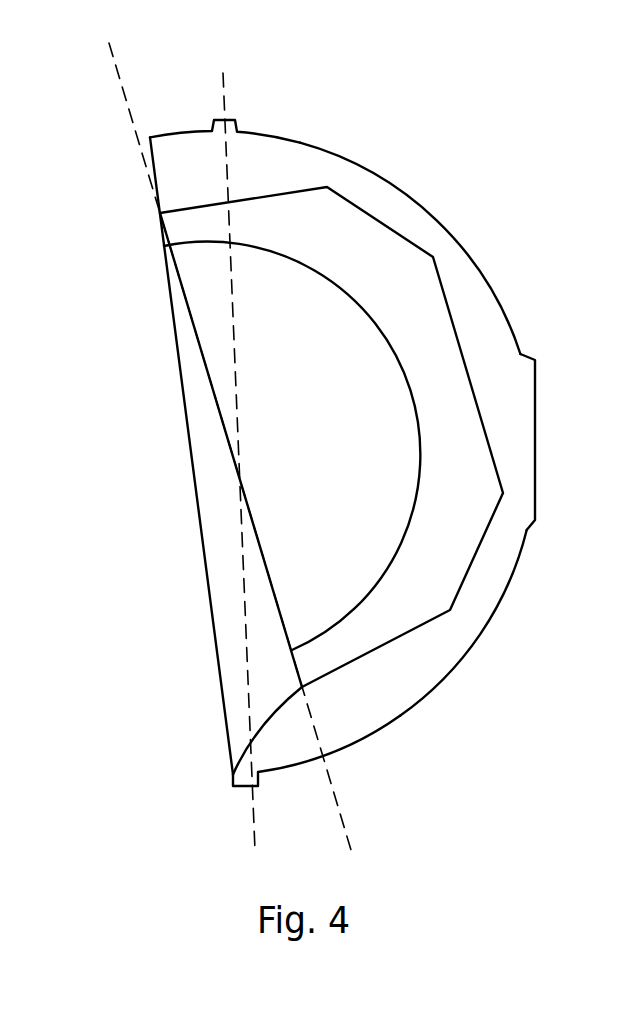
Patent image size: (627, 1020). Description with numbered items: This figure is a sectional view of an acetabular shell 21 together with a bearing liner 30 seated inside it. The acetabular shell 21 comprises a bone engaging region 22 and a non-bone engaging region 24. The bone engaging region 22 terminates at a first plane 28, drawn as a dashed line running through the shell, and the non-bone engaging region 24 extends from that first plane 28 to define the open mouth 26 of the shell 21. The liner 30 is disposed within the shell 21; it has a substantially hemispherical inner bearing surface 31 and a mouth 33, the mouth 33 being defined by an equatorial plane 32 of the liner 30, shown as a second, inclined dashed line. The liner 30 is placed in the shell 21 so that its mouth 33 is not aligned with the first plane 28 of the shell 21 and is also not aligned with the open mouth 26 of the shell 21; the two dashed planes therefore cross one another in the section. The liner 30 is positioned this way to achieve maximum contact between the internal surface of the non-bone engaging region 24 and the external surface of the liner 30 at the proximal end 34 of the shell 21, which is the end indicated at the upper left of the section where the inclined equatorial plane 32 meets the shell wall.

The acetabular shell 21 is at (515, 265).
The bone engaging region 22 is at (522, 418).
The non-bone engaging region 24 is at (187, 150).
The mouth 26 is at (214, 741).
The first plane 28 is at (226, 95).
The liner 30 is at (420, 607).
The inner bearing surface 31 is at (382, 337).
The equatorial plane 32 is at (340, 827).
The mouth 33 is at (271, 634).
The proximal end 34 is at (140, 182).